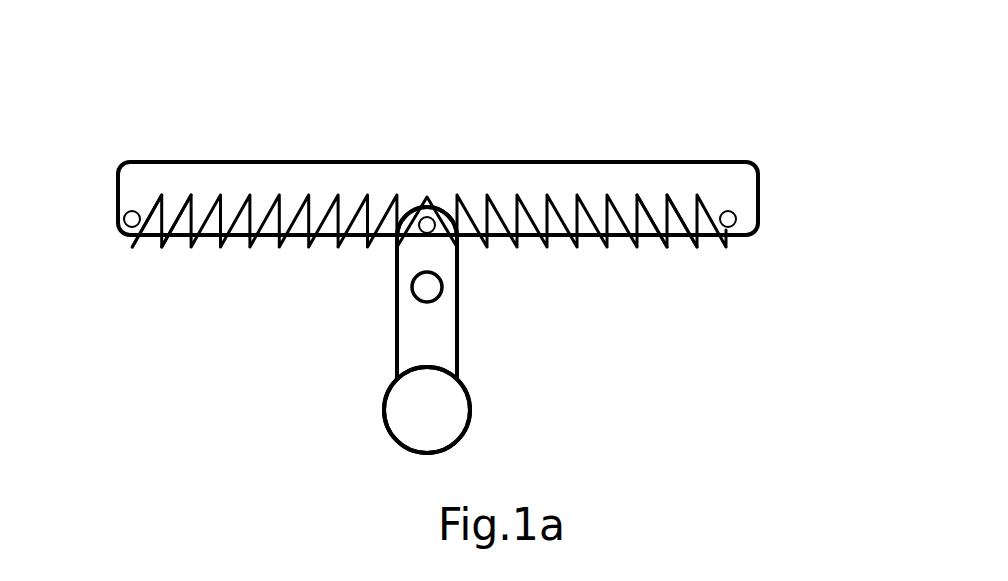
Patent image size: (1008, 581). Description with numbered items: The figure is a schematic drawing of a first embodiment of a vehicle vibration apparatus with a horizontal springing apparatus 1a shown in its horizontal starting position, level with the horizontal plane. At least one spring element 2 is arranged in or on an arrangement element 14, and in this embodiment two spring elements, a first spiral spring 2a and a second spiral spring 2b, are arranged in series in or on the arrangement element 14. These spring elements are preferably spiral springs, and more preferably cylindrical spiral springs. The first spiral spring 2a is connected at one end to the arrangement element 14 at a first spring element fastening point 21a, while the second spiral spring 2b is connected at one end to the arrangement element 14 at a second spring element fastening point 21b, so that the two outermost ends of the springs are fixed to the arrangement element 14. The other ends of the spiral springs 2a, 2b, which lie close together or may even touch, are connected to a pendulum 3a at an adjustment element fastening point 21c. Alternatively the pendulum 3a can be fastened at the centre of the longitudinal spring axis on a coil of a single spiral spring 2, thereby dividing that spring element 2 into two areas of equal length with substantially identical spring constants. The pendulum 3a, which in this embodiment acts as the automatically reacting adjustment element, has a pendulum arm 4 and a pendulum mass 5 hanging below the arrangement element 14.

The horizontal springing apparatus 1a is at (522, 142).
The arrangement element 14 is at (613, 175).
The spring element 2 is at (653, 238).
The first spiral spring 2a is at (648, 236).
The second spiral spring 2b is at (160, 243).
The first spring element fastening point 21a is at (729, 210).
The second spring element fastening point 21b is at (133, 210).
The adjustment element fastening point 21c is at (428, 200).
The pendulum 3a is at (335, 383).
The pendulum arm 4 is at (440, 337).
The pendulum mass 5 is at (455, 424).